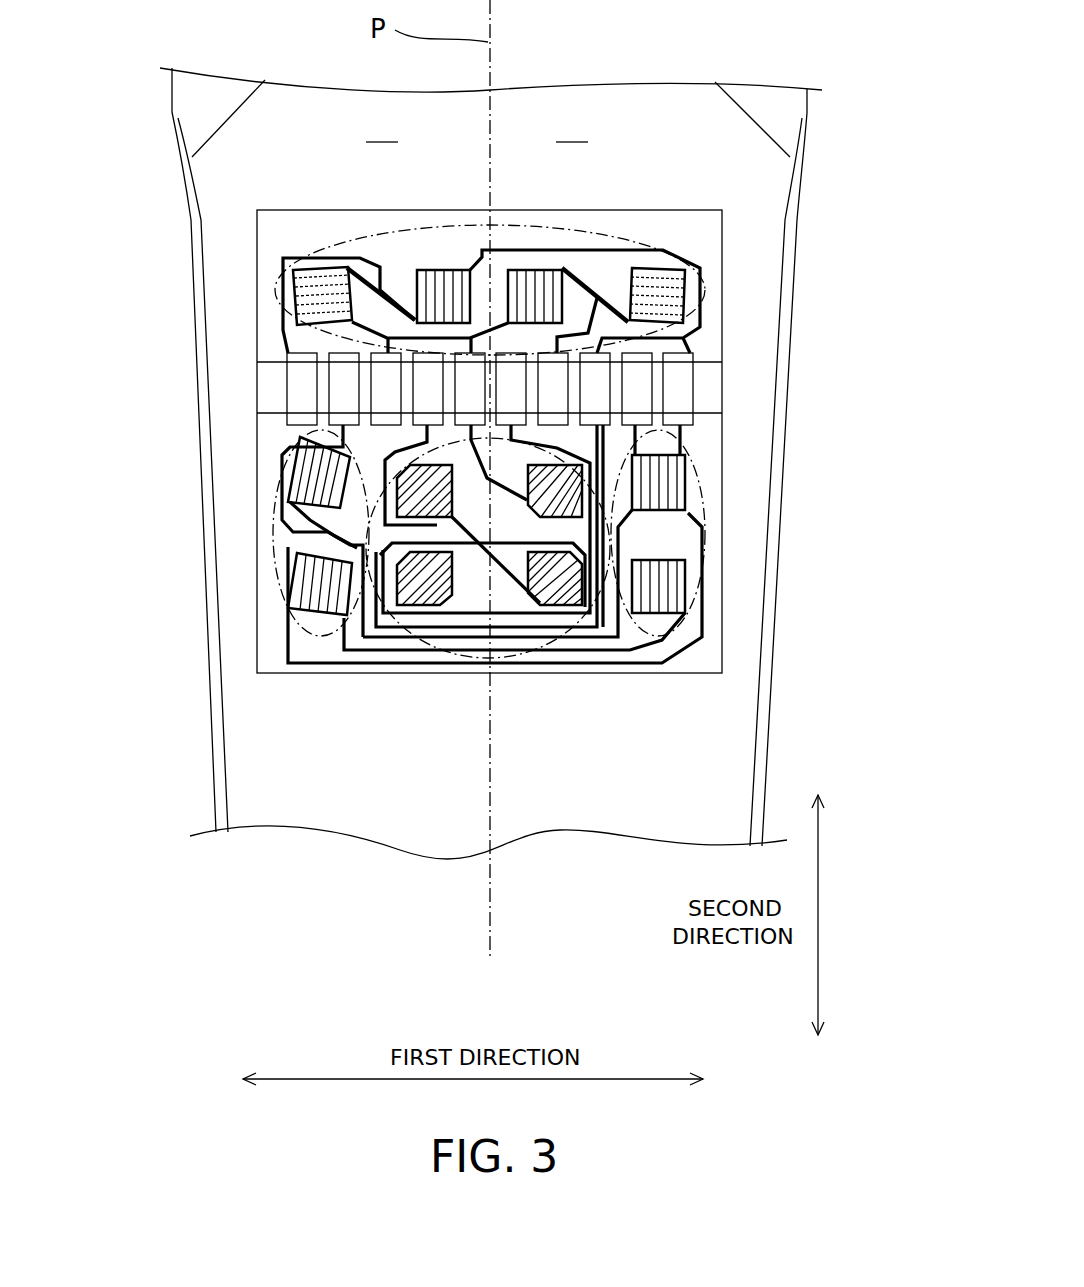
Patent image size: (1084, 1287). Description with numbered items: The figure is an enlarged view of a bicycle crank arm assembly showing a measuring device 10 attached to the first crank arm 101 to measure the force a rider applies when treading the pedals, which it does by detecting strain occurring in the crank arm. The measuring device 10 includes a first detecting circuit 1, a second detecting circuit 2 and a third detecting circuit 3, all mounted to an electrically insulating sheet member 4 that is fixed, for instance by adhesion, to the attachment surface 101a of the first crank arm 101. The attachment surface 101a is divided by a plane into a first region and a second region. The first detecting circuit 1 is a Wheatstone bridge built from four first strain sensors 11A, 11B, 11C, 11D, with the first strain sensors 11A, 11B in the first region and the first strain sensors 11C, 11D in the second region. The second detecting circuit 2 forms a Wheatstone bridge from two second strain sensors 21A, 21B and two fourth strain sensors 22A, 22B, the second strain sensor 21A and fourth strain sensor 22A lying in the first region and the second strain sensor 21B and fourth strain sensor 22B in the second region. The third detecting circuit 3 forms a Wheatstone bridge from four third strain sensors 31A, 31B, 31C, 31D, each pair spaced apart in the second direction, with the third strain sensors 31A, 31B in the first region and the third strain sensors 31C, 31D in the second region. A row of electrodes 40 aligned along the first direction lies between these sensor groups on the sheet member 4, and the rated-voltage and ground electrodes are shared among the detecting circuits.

The first detecting circuit 1 is at (295, 455).
The second detecting circuit 2 is at (575, 222).
The third detecting circuit 3 is at (480, 655).
The sheet member 4 is at (718, 248).
The measuring device 10 is at (748, 362).
The electrodes 40 is at (689, 389).
The first crank arm 101 is at (207, 707).
The attachment surface 101a is at (755, 210).
The first strain sensor 11A is at (688, 588).
The first strain sensor 11B is at (688, 483).
The first strain sensor 11C is at (290, 580).
The first strain sensor 11D is at (290, 468).
The second strain sensor 21A is at (535, 268).
The second strain sensor 21B is at (437, 268).
The fourth strain sensor 22A is at (660, 266).
The fourth strain sensor 22B is at (318, 265).
The third strain sensor 31A is at (558, 608).
The third strain sensor 31B is at (515, 520).
The third strain sensor 31C is at (458, 600).
The third strain sensor 31D is at (452, 522).